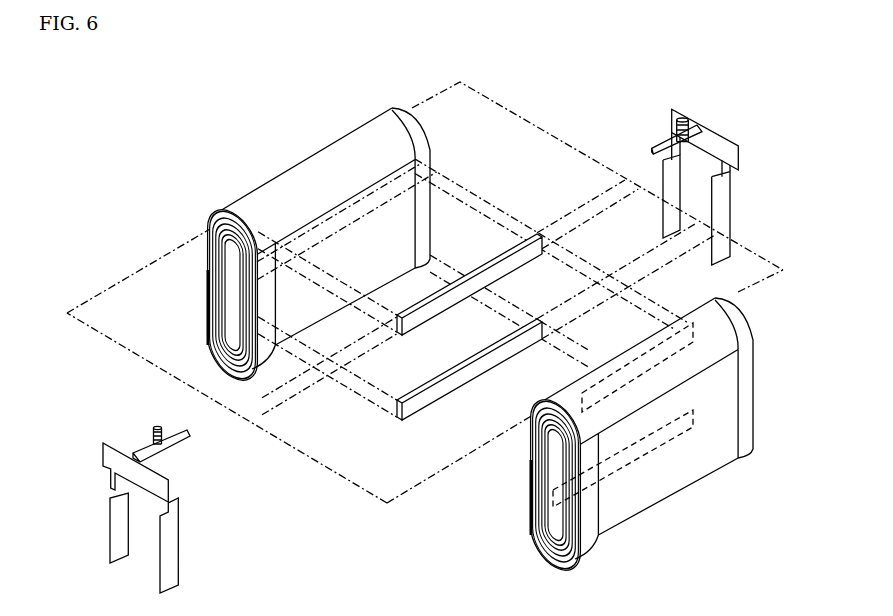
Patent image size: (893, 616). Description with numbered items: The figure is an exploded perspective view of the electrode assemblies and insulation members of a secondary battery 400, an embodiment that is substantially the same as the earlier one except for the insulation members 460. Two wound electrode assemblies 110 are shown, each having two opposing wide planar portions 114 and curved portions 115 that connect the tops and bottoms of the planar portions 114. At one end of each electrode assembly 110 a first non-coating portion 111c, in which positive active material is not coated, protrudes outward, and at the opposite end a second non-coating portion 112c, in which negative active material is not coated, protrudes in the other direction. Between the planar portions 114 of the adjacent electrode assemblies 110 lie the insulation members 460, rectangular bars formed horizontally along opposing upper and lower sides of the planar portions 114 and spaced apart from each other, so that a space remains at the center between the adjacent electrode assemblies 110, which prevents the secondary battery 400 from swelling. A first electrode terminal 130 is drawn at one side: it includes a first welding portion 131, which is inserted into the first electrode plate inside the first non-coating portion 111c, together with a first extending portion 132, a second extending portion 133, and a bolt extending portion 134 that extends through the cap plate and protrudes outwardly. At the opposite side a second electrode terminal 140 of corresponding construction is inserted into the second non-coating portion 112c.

The secondary battery 400 is at (783, 103).
The electrode assembly 110 is at (511, 352).
The first non-coating portion 111c is at (270, 370).
The second non-coating portion 112c is at (417, 133).
The planar portion 114 is at (309, 296).
The curved portion 115 is at (320, 178).
The insulation member 460 is at (491, 262).
The first electrode terminal 130 is at (119, 493).
The first welding portion 131 is at (118, 532).
The first extending portion 132 is at (107, 462).
The second extending portion 133 is at (138, 452).
The bolt extending portion 134 is at (153, 428).
The second electrode terminal 140 is at (679, 112).